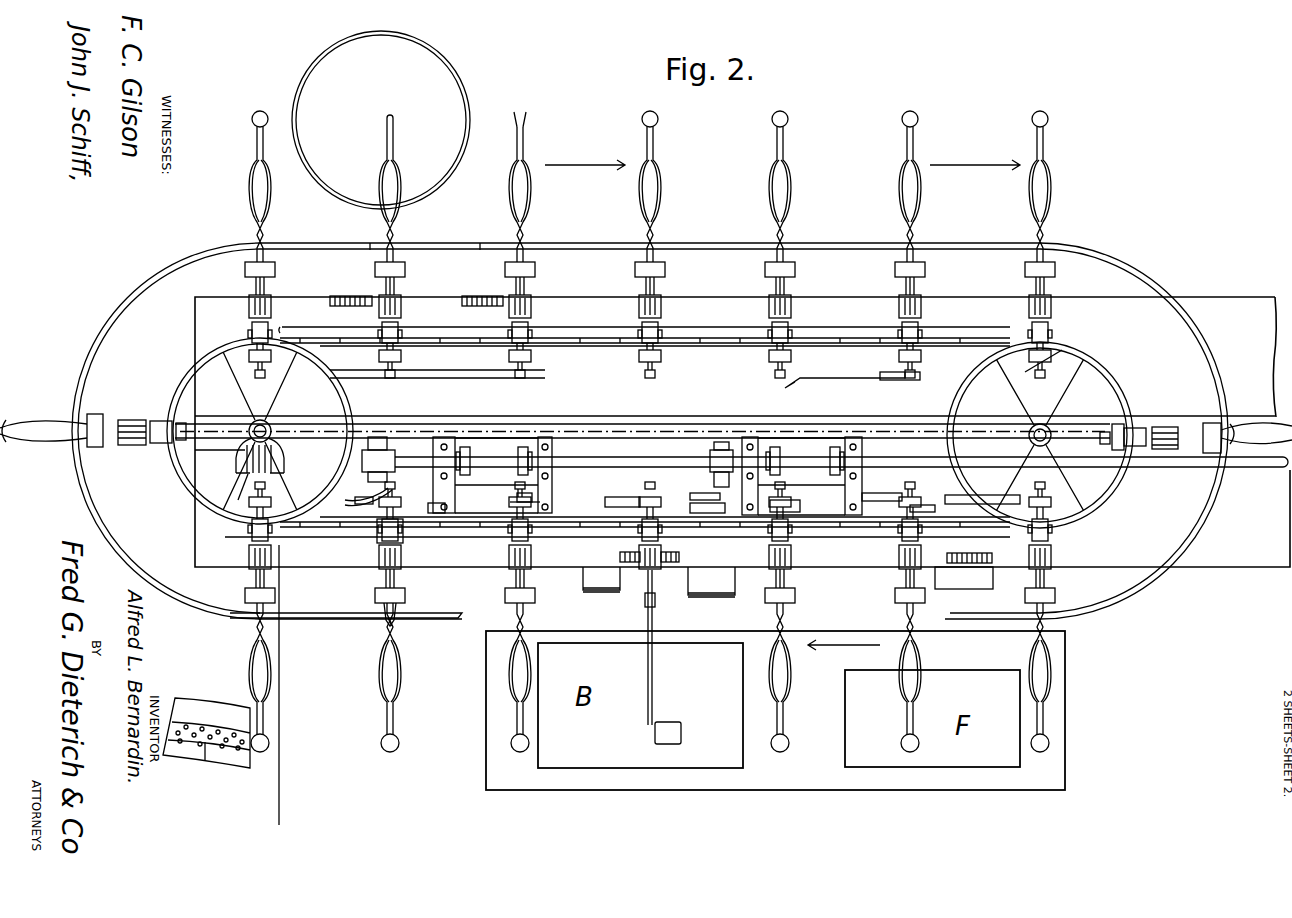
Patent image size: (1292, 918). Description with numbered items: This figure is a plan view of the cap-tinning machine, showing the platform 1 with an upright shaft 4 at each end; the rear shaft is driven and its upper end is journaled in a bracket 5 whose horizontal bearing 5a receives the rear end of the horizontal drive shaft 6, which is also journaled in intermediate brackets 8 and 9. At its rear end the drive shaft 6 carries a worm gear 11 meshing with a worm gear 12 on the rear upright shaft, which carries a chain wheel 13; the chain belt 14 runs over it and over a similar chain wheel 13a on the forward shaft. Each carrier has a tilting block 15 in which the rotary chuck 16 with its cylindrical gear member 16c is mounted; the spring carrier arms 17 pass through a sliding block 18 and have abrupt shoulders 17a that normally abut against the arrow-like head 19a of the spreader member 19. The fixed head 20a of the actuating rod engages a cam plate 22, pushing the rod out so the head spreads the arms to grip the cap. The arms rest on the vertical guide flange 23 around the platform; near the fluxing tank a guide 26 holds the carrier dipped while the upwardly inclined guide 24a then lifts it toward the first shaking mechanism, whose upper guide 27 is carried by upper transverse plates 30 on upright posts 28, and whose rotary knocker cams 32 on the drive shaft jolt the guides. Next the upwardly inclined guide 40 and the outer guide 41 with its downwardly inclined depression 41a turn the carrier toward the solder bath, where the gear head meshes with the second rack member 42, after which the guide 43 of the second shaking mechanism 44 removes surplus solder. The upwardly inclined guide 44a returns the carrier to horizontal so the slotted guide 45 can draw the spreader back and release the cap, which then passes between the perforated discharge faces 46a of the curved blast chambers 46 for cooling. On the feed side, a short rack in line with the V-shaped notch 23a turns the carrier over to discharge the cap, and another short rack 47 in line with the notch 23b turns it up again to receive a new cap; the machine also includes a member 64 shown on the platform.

The platform 1 is at (742, 432).
The upright shaft 4 is at (278, 410).
The bracket 5 is at (260, 418).
The horizontal bearing 5a is at (238, 458).
The drive shaft 6 is at (612, 462).
The intermediate bracket 8 is at (716, 452).
The intermediate bracket 9 is at (386, 452).
The worm gear 11 is at (256, 476).
The worm gear 12 is at (245, 425).
The chain wheel 13 is at (345, 383).
The chain wheel 13a is at (1076, 372).
The chain belt 14 is at (596, 348).
The block 15 is at (655, 332).
The rotary carrier head or chuck 16 is at (930, 490).
The cylindrical gear member 16c is at (404, 540).
The carrier arms 17 is at (392, 672).
The abrupt shoulders 17a is at (522, 114).
The sliding block 18 is at (536, 600).
The spreader member 19 is at (396, 618).
The arrow-like head 19a is at (386, 630).
The fixed head 20a is at (679, 440).
The cam plate 22 is at (862, 380).
The vertical guide flange 23 is at (718, 244).
The V-shaped notch 23a is at (370, 244).
The notch 23b is at (490, 240).
The upwardly inclined guide 24a is at (950, 590).
The guide 26 is at (985, 496).
The upper guide 27 is at (878, 506).
The upright posts 28 is at (756, 470).
The upper transverse plates 30 is at (801, 432).
The rotary knocker cams 32 is at (802, 476).
The upwardly inclined guide 40 is at (694, 550).
The outer guide 41 is at (740, 590).
The downwardly inclined depression 41a is at (644, 592).
The second rack member 42 is at (660, 556).
The guide 43 is at (472, 512).
The second shaking mechanism 44 is at (492, 475).
The upwardly inclined guide 44a is at (444, 614).
The slotted guide 45 is at (357, 500).
The blast chambers 46 is at (203, 712).
The perforated discharge faces 46a is at (215, 748).
The short rack 47 is at (478, 294).
The brush 64 is at (344, 294).